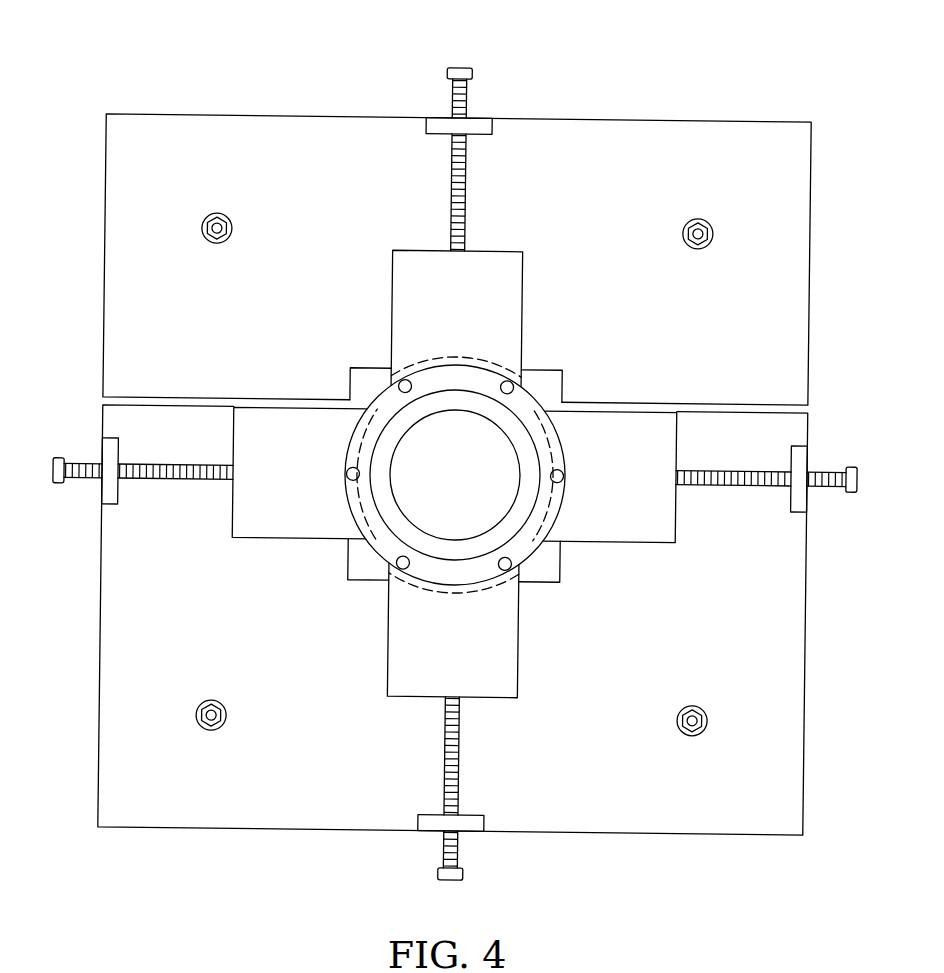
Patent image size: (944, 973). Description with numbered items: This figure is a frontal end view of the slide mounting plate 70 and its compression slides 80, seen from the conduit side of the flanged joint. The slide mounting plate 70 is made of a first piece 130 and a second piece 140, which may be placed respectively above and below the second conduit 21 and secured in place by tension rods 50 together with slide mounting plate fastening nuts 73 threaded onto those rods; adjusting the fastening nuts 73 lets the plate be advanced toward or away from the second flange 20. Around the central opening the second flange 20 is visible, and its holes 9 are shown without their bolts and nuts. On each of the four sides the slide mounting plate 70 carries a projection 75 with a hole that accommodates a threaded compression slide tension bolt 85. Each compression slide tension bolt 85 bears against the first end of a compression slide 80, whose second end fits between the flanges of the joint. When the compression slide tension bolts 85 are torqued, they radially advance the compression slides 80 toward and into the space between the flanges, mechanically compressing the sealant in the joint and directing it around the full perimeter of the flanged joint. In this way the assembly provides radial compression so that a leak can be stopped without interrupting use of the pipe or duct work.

The slide mounting plate 70 is at (448, 474).
The first piece 130 is at (783, 334).
The second piece 140 is at (783, 596).
The second flange 20 is at (523, 392).
The second conduit 21 is at (482, 458).
The holes 9 is at (564, 471).
The compression slides 80 is at (398, 289).
The projections 75 is at (475, 128).
The compression slide tension bolts 85 is at (443, 76).
The slide mounting plate fastening nuts 73 is at (226, 231).
The tension rods 50 is at (214, 241).